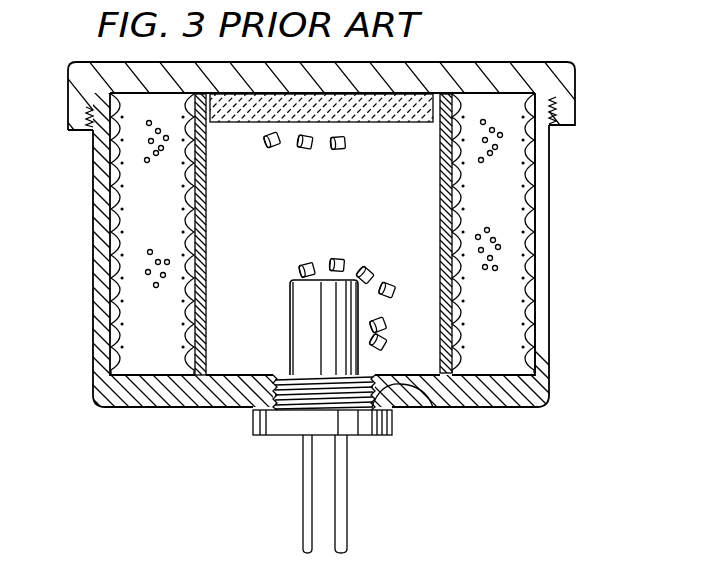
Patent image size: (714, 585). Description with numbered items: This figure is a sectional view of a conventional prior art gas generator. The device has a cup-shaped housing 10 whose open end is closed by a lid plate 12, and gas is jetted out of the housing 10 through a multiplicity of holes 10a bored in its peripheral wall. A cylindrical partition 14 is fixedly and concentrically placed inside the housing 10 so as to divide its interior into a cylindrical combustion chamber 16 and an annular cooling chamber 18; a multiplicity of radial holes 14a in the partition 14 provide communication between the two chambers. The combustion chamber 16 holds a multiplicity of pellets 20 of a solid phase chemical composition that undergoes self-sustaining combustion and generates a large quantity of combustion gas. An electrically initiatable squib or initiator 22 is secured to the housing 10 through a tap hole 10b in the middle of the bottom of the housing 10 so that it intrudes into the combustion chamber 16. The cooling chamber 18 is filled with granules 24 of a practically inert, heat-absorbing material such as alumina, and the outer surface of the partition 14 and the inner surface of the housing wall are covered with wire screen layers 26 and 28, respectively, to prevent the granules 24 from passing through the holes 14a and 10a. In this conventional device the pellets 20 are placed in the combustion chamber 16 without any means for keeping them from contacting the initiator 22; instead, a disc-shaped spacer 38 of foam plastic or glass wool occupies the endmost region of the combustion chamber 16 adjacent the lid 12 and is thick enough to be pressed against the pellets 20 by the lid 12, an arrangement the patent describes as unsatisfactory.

The cup-shaped housing 10 is at (514, 390).
The holes 10a is at (543, 234).
The tap hole 10b is at (406, 386).
The lid plate 12 is at (478, 72).
The cylindrical partition 14 is at (206, 172).
The radial holes 14a is at (207, 219).
The combustion chamber 16 is at (362, 200).
The cooling chamber 18 is at (161, 200).
The pellets 20 is at (389, 337).
The initiator 22 is at (373, 427).
The granules 24 is at (157, 287).
The wire screen layer 26 is at (456, 332).
The wire screen layer 28 is at (536, 336).
The disc-shaped spacer 38 is at (378, 112).